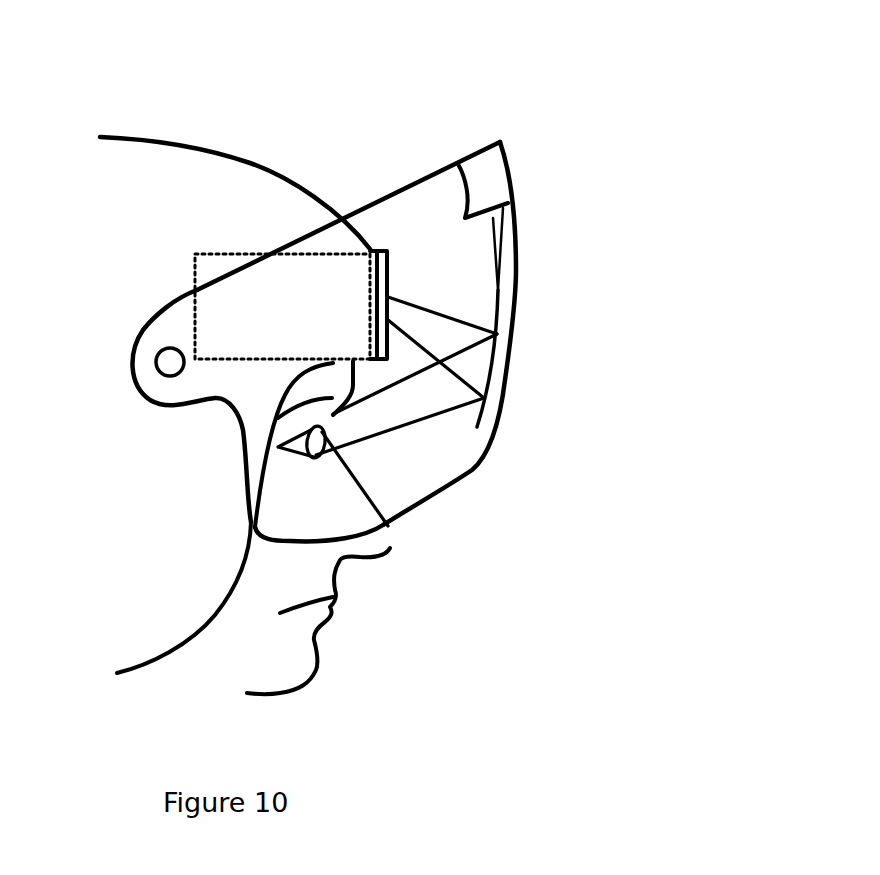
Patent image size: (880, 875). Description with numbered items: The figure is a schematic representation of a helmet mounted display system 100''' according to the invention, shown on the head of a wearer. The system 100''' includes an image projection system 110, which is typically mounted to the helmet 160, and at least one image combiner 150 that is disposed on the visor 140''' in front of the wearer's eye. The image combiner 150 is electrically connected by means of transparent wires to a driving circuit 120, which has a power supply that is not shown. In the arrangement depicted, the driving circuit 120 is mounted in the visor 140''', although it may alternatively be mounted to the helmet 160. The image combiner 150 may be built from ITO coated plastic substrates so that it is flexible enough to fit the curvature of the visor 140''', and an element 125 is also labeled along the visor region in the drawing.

The helmet mounted display system 100''' is at (435, 283).
The helmet 160 is at (172, 170).
The image projection system 110 is at (193, 262).
The visor 140''' is at (362, 315).
The driving circuit 120 is at (492, 177).
The visor lens 125 is at (507, 247).
The image combiner 150 is at (485, 412).